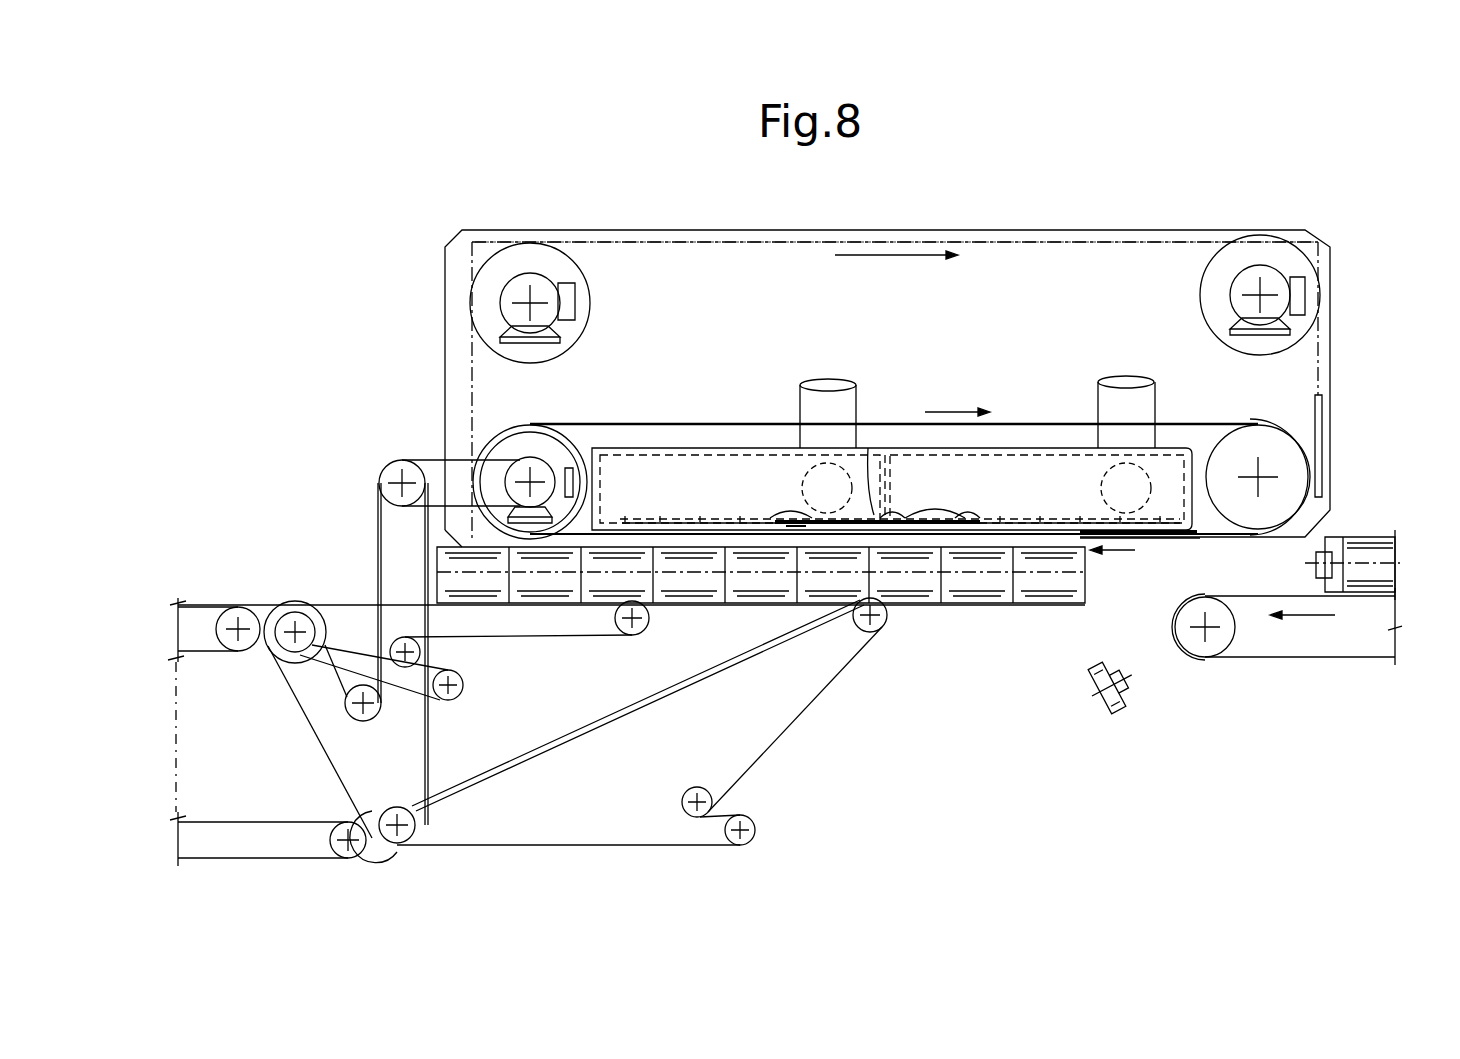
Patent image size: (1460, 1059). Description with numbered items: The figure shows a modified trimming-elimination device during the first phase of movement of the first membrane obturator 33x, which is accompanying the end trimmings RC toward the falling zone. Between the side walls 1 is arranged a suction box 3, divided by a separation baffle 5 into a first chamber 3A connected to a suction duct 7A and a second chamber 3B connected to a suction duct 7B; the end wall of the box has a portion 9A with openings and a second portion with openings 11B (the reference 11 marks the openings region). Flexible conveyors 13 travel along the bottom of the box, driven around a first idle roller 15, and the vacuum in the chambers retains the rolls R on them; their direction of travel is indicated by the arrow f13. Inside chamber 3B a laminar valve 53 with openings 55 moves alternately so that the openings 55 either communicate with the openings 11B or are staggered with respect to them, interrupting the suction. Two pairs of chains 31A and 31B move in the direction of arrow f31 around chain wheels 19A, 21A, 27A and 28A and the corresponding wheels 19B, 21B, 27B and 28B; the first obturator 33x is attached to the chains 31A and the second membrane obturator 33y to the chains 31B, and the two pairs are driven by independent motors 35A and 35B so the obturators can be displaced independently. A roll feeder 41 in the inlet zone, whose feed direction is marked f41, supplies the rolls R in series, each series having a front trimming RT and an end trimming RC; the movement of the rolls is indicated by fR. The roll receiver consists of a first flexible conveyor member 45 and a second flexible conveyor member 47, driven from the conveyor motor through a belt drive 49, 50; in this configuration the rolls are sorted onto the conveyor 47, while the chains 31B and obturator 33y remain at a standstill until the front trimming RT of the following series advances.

The side walls 1 is at (568, 452).
The suction box 3 is at (892, 458).
The first chamber 3A is at (658, 500).
The second chamber 3B is at (1005, 478).
The separation baffle 5 is at (890, 515).
The suction duct 7A is at (822, 392).
The suction duct 7B is at (1112, 385).
The end wall portion 9A is at (916, 517).
The web element 11 is at (962, 517).
The openings 11B is at (802, 530).
The flexible conveyors 13 is at (694, 424).
The first idle roller 15 is at (1228, 450).
The chain wheels 19A is at (530, 464).
The drive pulley 19B is at (512, 455).
The chain wheels 21A is at (1340, 450).
The belt guide 21B is at (1292, 452).
The chain wheels 27A is at (592, 320).
The motor bracket 27B is at (572, 322).
The chain wheels 28A is at (1264, 271).
The motor 28B is at (1262, 252).
The chains 31A is at (895, 219).
The chains 31B is at (860, 240).
The first membrane obturator 33x is at (1162, 538).
The second membrane obturator 33y is at (1322, 462).
The motor 35A is at (1297, 322).
The motor 35B is at (540, 263).
The roll feeder 41 is at (1270, 660).
The first flexible conveyor member 45 is at (843, 714).
The second flexible conveyor member 47 is at (469, 638).
The belt drive 49 is at (400, 458).
The belt drive 50 is at (376, 560).
The laminar valve 53 is at (782, 517).
The openings 55 is at (868, 448).
The rolls R is at (960, 610).
The front trimming RT is at (1318, 565).
The end trimming RC is at (1106, 708).
The arrow f31 is at (892, 258).
The arrow f13 is at (957, 400).
The pallet movement direction fR is at (1115, 556).
The conveyor movement direction f41 is at (1306, 606).